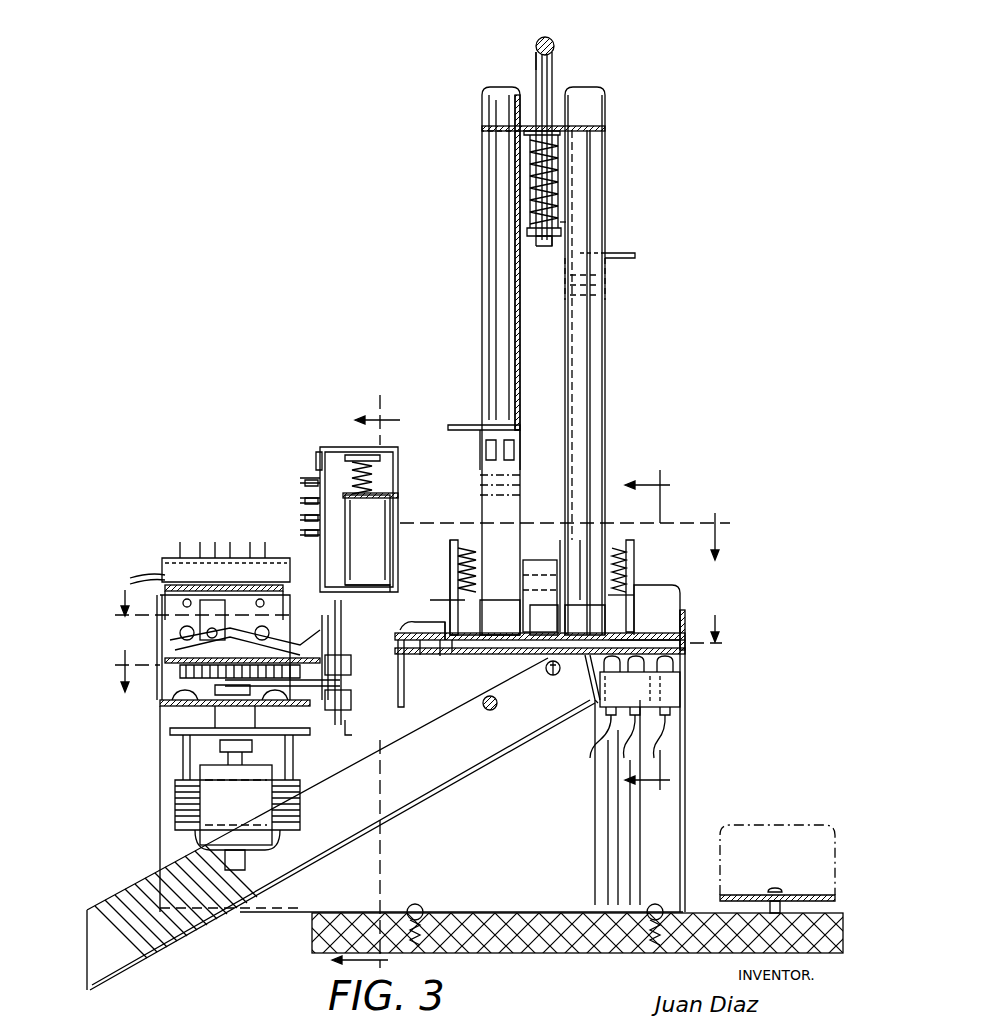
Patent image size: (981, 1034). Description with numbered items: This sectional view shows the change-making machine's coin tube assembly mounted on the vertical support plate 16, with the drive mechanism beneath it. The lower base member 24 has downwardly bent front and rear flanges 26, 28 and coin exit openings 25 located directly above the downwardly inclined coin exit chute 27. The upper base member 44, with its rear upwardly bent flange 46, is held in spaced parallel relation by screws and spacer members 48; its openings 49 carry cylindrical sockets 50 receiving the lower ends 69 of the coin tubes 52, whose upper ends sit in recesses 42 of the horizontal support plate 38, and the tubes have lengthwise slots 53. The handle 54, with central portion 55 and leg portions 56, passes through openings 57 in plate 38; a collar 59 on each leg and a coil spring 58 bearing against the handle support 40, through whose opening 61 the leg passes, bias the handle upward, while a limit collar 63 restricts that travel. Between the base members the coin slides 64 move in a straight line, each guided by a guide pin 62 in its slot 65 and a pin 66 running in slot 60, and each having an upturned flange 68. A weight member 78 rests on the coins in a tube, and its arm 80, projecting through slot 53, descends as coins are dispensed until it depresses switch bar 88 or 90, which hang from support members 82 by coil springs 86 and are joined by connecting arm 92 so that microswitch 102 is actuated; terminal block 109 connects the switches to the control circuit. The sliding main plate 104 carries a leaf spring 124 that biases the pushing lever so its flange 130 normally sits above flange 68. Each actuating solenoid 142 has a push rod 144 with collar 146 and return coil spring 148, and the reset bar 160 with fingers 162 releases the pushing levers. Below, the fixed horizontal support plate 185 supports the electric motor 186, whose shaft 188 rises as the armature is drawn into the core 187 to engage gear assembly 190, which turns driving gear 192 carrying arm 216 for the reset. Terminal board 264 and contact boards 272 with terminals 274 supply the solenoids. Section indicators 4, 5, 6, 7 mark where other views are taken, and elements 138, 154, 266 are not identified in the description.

The vertical support plate 16 is at (421, 822).
The lower base member 24 is at (405, 656).
The coin exit openings 25 is at (528, 656).
The front flange 26 is at (404, 694).
The coin exit chute 27 is at (505, 765).
The rear flange 28 is at (686, 682).
The horizontal support plate 38 is at (600, 128).
The handle support 40 is at (560, 225).
The coin tube-receiving recesses 42 is at (490, 140).
The upper base member 44 is at (590, 662).
The rear upwardly bent flange 46 is at (683, 616).
The spacer members 48 is at (684, 640).
The openings 49 is at (546, 670).
The cylindrical sockets 50 is at (567, 618).
The coin tubes 52 is at (480, 331).
The slots 53 is at (495, 296).
The handle 54 is at (533, 62).
The central horizontal portion 55 is at (553, 40).
The leg portions 56 is at (553, 76).
The openings 57 is at (530, 128).
The coil spring 58 is at (535, 200).
The collar 59 is at (535, 140).
The slots 60 is at (652, 630).
The opening 61 is at (530, 232).
The guide pin 62 is at (448, 645).
The limit collar 63 is at (535, 238).
The coin slides 64 is at (448, 641).
The slot 65 is at (430, 655).
The pin 66 is at (636, 648).
The flange 68 is at (338, 645).
The lower ends 69 is at (500, 617).
The weight member 78 is at (610, 275).
The arm 80 is at (618, 256).
The support members 82 is at (455, 540).
The coil spring 86 is at (460, 560).
The switch bar 88 is at (470, 595).
The switch bar 90 is at (632, 590).
The connecting arm 92 is at (582, 598).
The single-pole double-throw switch 102 is at (540, 560).
The sliding main plate 104 is at (180, 662).
The terminal block 109 is at (635, 707).
The leaf spring 124 is at (185, 636).
The flange 130 is at (442, 610).
The lever 138 is at (412, 626).
The actuating solenoid 142 is at (349, 519).
The push rod 144 is at (372, 476).
The collar 146 is at (375, 460).
The coil spring 148 is at (372, 493).
The shaft end 154 is at (336, 728).
The reset bar 160 is at (318, 678).
The fingers 162 is at (340, 670).
The fixed horizontal support plate 185 is at (172, 710).
The first electric motor 186 is at (175, 805).
The core 187 is at (180, 815).
The shaft 188 is at (235, 756).
The gear assembly 190 is at (235, 745).
The driving gear 192 is at (332, 660).
The arm 216 is at (338, 692).
The contact terminal board 264 is at (160, 565).
The terminals 266 is at (255, 545).
The terminal contact boards 272 is at (318, 476).
The terminal 274 is at (318, 520).
The section line 4- 4 is at (418, 575).
The section line 5- 5 is at (417, 653).
The section line 6- 6 is at (368, 683).
The section line 7- 7 is at (647, 633).